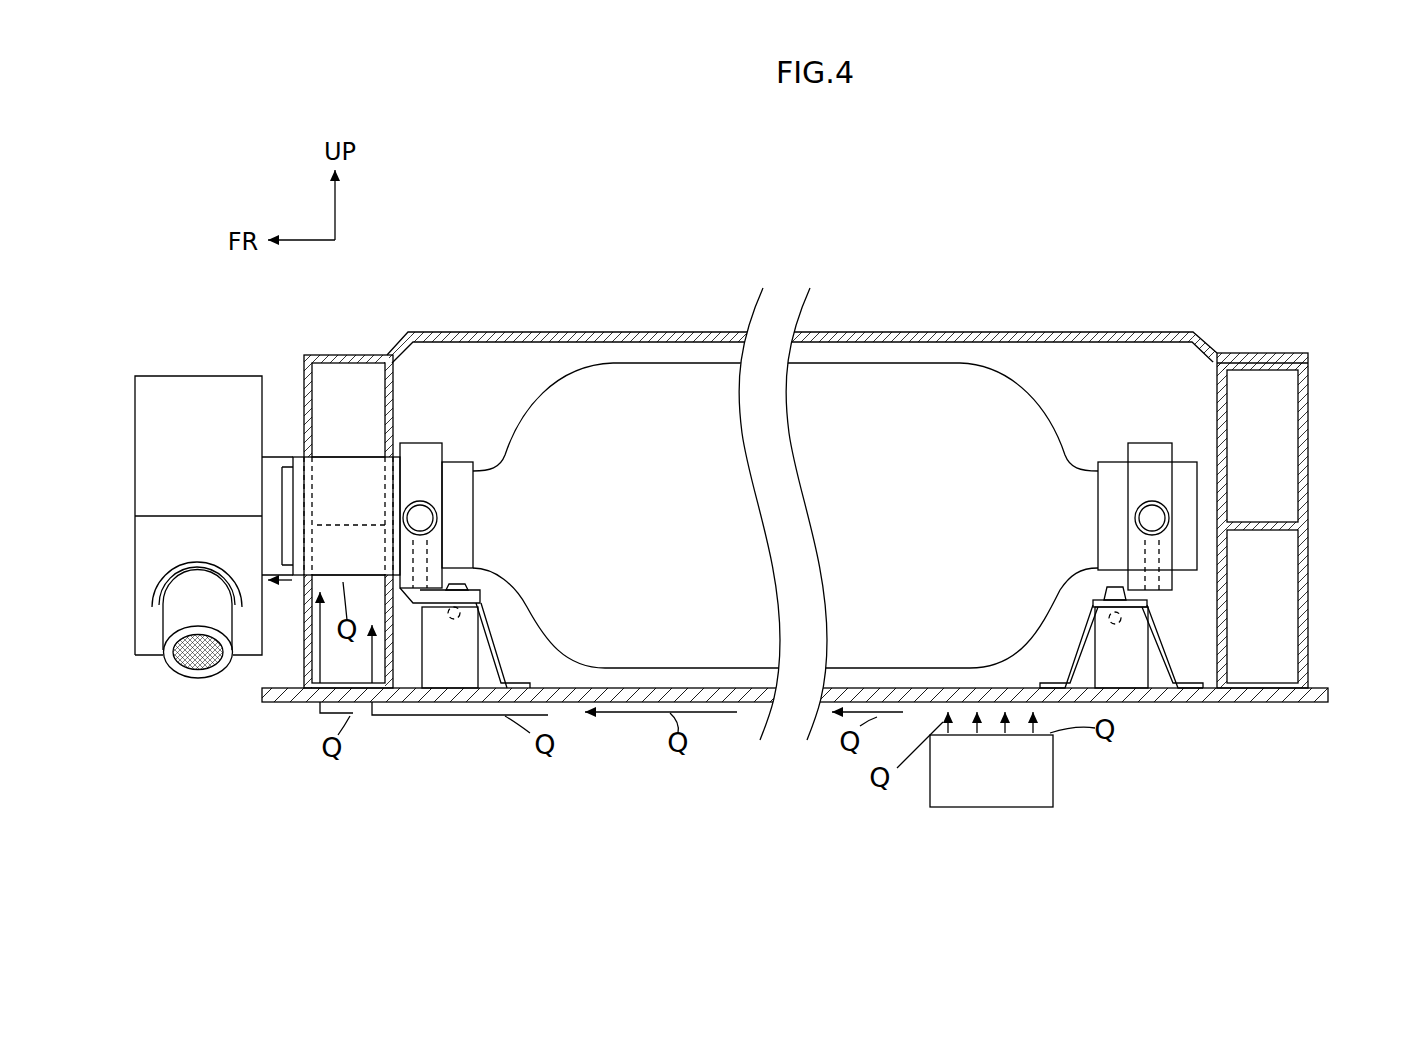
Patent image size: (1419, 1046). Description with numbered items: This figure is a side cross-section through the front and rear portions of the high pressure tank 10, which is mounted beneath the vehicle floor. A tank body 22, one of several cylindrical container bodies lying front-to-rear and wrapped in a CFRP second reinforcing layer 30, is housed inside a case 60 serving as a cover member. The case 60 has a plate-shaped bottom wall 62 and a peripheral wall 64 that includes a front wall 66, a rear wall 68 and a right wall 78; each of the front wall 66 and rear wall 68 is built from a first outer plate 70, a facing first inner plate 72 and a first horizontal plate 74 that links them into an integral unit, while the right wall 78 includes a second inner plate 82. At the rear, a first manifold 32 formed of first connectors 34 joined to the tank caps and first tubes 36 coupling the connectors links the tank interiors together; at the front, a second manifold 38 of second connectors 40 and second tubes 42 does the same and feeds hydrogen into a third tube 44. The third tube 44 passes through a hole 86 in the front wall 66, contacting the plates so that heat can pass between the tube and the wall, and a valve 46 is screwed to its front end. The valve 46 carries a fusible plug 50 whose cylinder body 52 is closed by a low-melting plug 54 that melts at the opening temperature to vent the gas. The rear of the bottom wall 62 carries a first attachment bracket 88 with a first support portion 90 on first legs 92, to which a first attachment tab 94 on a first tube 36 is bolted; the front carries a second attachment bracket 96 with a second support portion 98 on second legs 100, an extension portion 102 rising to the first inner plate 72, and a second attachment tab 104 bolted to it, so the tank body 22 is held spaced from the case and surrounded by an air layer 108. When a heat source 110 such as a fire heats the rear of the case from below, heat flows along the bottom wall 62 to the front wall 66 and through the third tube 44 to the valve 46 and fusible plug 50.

The high pressure tank 10 is at (1027, 232).
The tank body 22 is at (868, 350).
The second reinforcing layer 30 is at (930, 362).
The first manifold 32 is at (1178, 428).
The first connector 34 is at (1150, 440).
The first tube 36 is at (1152, 500).
The second manifold 38 is at (447, 430).
The second connector 40 is at (422, 442).
The second tube 42 is at (420, 501).
The third tube 44 is at (343, 452).
The valve 46 is at (190, 378).
The fusible plug 50 is at (190, 535).
The cylinder body 52 is at (163, 620).
The plug 54 is at (203, 664).
The case 60 is at (1120, 302).
The bottom wall 62 is at (1268, 703).
The peripheral wall 64 is at (415, 368).
The front wall 66 is at (300, 365).
The rear wall 68 is at (1310, 448).
The first outer plate 70 is at (304, 406).
The first inner plate 72 is at (384, 395).
The first horizontal plate 74 is at (343, 520).
The right wall 78 is at (532, 357).
The second inner plate 82 is at (1077, 362).
The hole 86 is at (298, 475).
The first attachment bracket 88 is at (1173, 630).
The first support portion 90 is at (1080, 585).
The first leg 92 is at (1072, 647).
The first attachment tab 94 is at (1108, 588).
The second attachment bracket 96 is at (510, 613).
The second support portion 98 is at (475, 598).
The second leg 100 is at (503, 660).
The extension portion 102 is at (413, 605).
The second attachment tab 104 is at (460, 587).
The air layer 108 is at (755, 673).
The heat source 110 is at (987, 795).